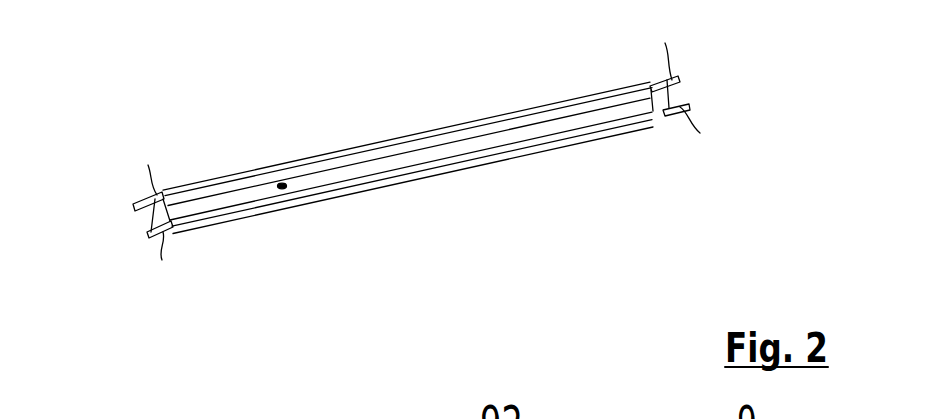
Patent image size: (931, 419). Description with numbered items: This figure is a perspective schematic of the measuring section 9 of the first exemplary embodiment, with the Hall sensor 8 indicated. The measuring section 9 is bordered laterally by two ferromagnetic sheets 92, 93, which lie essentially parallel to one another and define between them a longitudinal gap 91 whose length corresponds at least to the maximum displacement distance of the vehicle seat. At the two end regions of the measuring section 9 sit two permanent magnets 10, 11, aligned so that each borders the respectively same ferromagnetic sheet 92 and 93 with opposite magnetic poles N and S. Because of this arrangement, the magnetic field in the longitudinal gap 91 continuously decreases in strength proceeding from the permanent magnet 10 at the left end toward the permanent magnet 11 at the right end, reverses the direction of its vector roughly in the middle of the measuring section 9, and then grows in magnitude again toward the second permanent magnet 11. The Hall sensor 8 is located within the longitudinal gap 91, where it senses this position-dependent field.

The Hall sensor 8 is at (280, 183).
The measuring section 9 is at (672, 189).
The permanent magnet 10 is at (143, 214).
The permanent magnet 11 is at (680, 92).
The longitudinal gap 91 is at (530, 133).
The ferromagnetic sheet 92 is at (233, 173).
The ferromagnetic sheet 93 is at (403, 178).